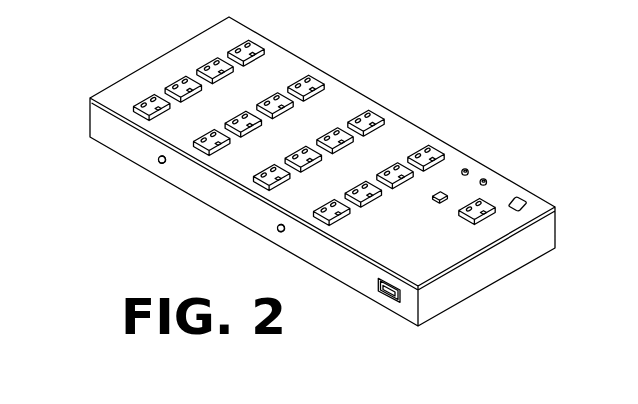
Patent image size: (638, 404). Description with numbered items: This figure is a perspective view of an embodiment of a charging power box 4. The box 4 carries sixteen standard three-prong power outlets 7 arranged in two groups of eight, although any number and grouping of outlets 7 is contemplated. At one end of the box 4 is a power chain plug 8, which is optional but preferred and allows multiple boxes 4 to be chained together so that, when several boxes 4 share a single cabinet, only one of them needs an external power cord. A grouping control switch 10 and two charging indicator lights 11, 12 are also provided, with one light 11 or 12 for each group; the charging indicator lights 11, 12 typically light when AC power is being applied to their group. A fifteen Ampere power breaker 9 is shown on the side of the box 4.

The charging power box 4 is at (400, 128).
The power outlets 7 is at (307, 80).
The power chain plug 8 is at (488, 208).
The power breaker 9 is at (385, 295).
The grouping control switch 10 is at (441, 191).
The charging indicator light 11 is at (157, 160).
The charging indicator light 12 is at (278, 230).